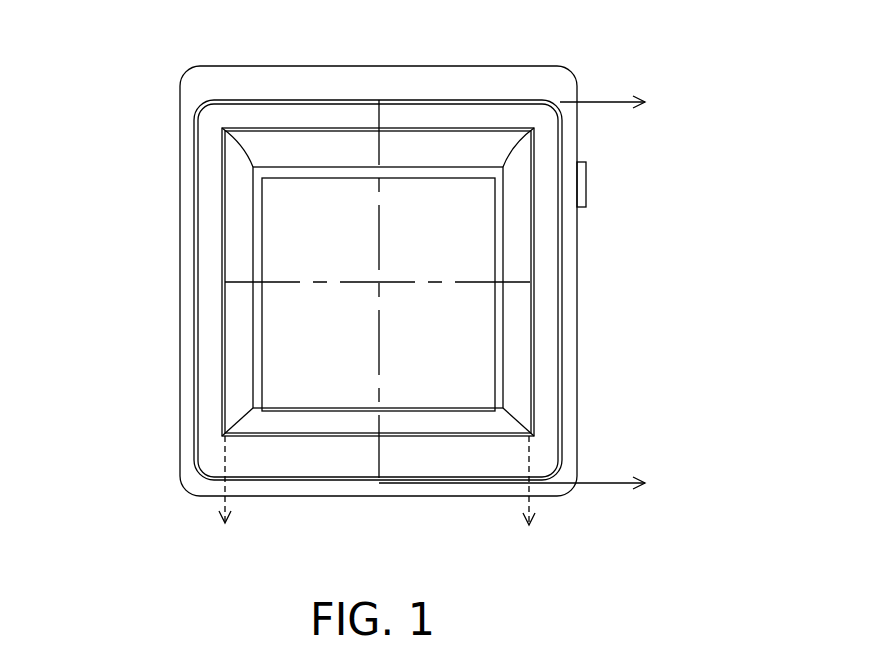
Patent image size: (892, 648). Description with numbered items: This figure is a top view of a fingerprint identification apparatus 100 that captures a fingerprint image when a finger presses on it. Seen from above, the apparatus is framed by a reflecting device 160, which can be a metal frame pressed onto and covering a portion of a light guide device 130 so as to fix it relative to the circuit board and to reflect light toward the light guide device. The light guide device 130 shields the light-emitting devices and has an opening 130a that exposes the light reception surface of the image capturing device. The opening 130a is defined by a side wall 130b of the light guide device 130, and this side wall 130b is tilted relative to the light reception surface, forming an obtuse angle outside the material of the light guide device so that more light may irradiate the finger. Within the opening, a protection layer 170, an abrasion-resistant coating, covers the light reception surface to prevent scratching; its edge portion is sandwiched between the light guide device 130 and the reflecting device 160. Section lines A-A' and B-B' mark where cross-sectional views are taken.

The fingerprint identification apparatus 100 is at (417, 292).
The light guide device 130 is at (378, 286).
The opening 130a is at (477, 152).
The side wall 130b is at (442, 120).
The reflecting device 160 is at (547, 225).
The protection layer 170 is at (478, 322).